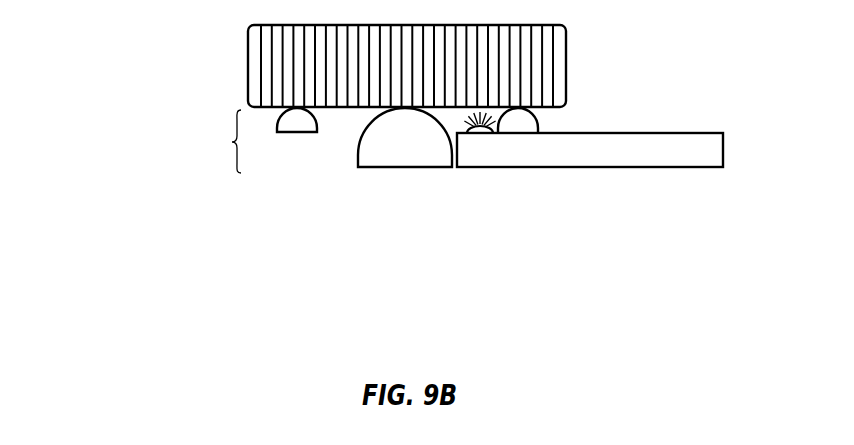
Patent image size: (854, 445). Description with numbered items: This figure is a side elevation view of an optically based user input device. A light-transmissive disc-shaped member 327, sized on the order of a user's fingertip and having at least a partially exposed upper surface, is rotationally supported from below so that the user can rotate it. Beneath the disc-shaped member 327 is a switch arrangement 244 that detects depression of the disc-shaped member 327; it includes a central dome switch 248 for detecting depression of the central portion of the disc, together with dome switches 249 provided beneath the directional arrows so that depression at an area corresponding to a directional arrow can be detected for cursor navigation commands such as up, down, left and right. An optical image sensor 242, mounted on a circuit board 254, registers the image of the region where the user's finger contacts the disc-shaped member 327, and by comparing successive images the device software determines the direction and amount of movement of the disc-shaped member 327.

The light-transmissive disc-shaped member 327 is at (195, 53).
The switch arrangement 244 is at (232, 142).
The dome switches 249 is at (296, 133).
The central dome switch 248 is at (412, 167).
The optical image sensor 242 is at (481, 146).
The substrate 254 is at (631, 193).